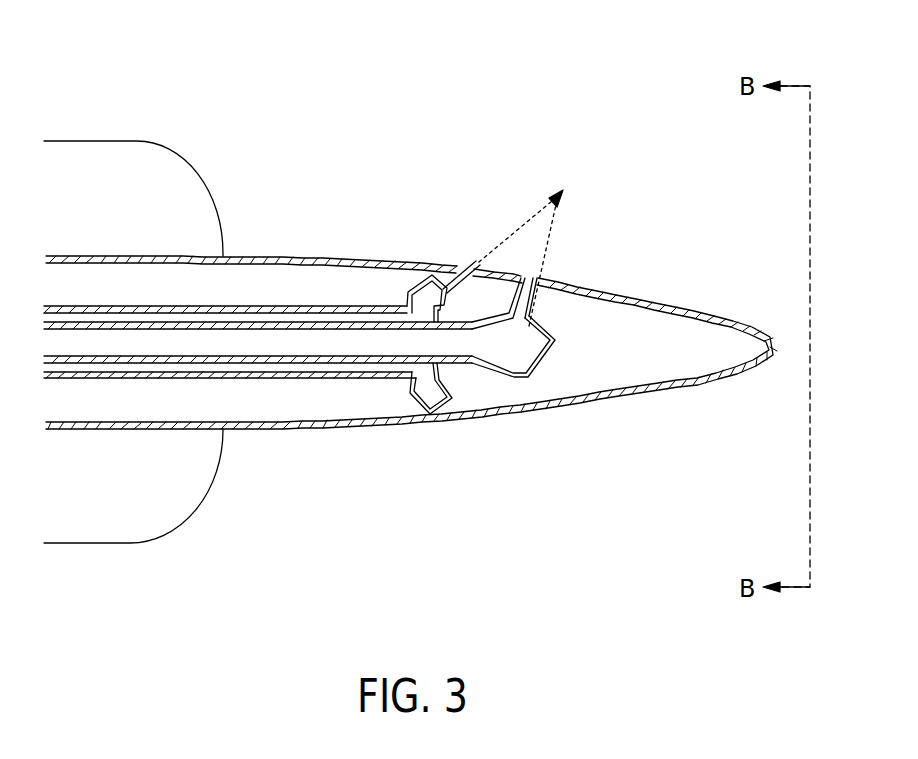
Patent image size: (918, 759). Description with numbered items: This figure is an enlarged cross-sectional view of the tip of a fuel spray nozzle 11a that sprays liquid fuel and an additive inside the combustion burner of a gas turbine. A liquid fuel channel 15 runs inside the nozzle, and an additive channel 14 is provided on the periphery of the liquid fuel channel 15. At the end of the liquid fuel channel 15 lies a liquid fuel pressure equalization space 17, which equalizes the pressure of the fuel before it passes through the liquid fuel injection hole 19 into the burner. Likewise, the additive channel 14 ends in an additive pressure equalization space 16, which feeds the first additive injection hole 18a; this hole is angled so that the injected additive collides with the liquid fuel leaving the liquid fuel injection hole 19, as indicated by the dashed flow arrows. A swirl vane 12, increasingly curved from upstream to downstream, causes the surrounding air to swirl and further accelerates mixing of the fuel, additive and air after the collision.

The fuel spray nozzle 11a is at (575, 142).
The swirl vane 12 is at (127, 167).
The additive channel 14 is at (352, 307).
The liquid fuel channel 15 is at (353, 345).
The additive pressure equalization space 16 is at (432, 298).
The liquid fuel pressure equalization space 17 is at (512, 350).
The first additive injection hole 18a is at (465, 270).
The liquid fuel injection hole 19 is at (556, 276).